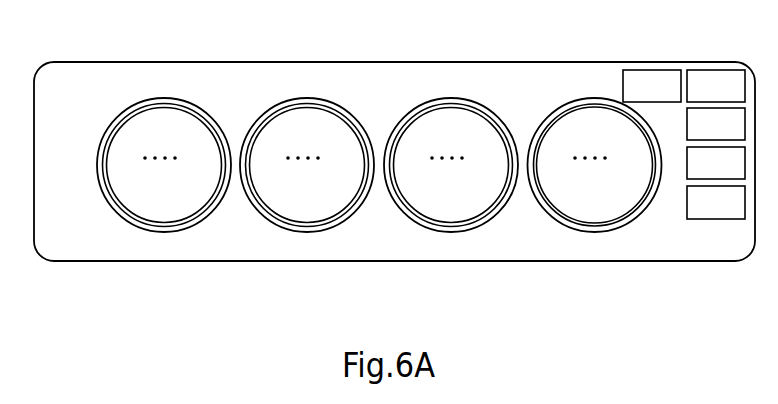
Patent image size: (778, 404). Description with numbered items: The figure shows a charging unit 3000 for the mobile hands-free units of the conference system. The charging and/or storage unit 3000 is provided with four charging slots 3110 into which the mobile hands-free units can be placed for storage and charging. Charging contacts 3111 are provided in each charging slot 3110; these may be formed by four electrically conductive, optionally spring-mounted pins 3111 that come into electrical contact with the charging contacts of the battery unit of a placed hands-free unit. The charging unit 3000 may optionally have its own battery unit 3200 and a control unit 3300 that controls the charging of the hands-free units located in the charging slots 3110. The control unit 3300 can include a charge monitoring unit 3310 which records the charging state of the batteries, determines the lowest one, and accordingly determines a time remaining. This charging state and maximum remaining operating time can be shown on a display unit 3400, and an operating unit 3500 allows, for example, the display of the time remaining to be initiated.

The charging unit 3000 is at (72, 261).
The charging slot 3110 is at (128, 107).
The charging contacts 3111 is at (155, 165).
The charge monitoring unit 3310 is at (652, 86).
The battery unit 3200 is at (716, 86).
The control unit 3300 is at (716, 124).
The display unit 3400 is at (716, 163).
The operating unit 3500 is at (716, 202).